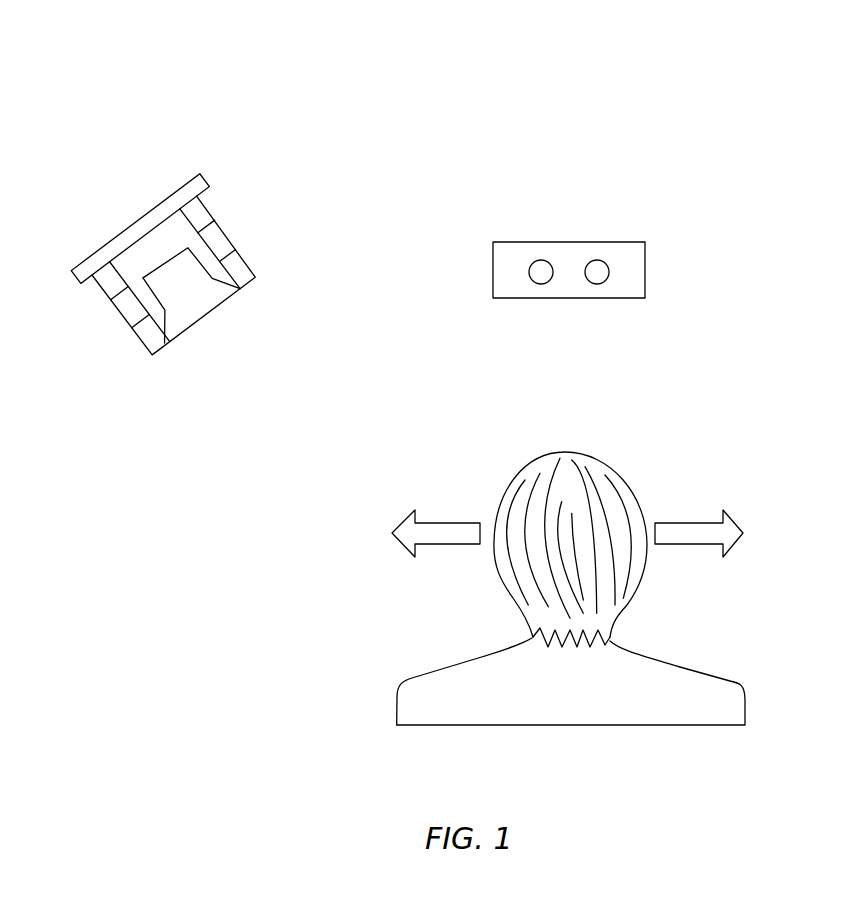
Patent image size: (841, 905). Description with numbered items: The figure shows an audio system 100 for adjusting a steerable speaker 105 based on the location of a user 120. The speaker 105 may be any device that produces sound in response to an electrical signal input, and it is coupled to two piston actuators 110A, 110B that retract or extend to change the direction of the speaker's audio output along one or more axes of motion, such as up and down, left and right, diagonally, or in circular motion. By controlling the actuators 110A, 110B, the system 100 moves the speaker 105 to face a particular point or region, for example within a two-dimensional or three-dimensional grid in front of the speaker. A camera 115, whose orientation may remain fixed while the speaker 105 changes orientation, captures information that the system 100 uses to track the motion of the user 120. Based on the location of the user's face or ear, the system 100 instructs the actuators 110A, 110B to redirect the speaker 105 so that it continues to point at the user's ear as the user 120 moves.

The audio system 100 is at (727, 91).
The steerable speaker 105 is at (210, 313).
The actuator 110A is at (227, 240).
The actuator 110B is at (120, 312).
The camera 115 is at (646, 270).
The user 120 is at (567, 450).